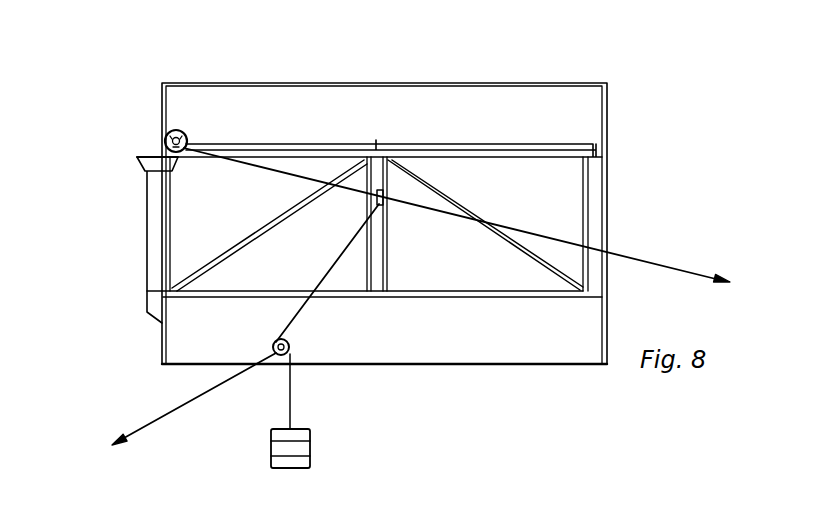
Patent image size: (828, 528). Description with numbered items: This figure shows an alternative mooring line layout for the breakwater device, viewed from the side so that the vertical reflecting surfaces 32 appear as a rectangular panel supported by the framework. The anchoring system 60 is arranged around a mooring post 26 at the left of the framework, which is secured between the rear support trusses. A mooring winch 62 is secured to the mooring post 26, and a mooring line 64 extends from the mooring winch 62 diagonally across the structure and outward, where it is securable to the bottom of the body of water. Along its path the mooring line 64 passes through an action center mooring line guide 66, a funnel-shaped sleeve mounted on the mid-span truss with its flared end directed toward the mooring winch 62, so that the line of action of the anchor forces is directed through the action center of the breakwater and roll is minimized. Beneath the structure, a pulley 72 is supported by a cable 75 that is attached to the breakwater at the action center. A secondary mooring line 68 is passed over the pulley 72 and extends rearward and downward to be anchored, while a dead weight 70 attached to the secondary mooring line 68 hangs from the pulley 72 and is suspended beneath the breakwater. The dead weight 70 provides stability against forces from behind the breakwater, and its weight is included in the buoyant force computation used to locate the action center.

The mooring post 26 is at (147, 226).
The vertical reflecting surfaces 32 is at (414, 82).
The anchoring system 60 is at (147, 145).
The mooring winch 62 is at (190, 133).
The mooring line 64 is at (660, 261).
The action center mooring line guide 66 is at (384, 205).
The secondary mooring line 68 is at (176, 407).
The dead weight 70 is at (310, 447).
The pulley 72 is at (290, 347).
The cable 75 is at (338, 254).